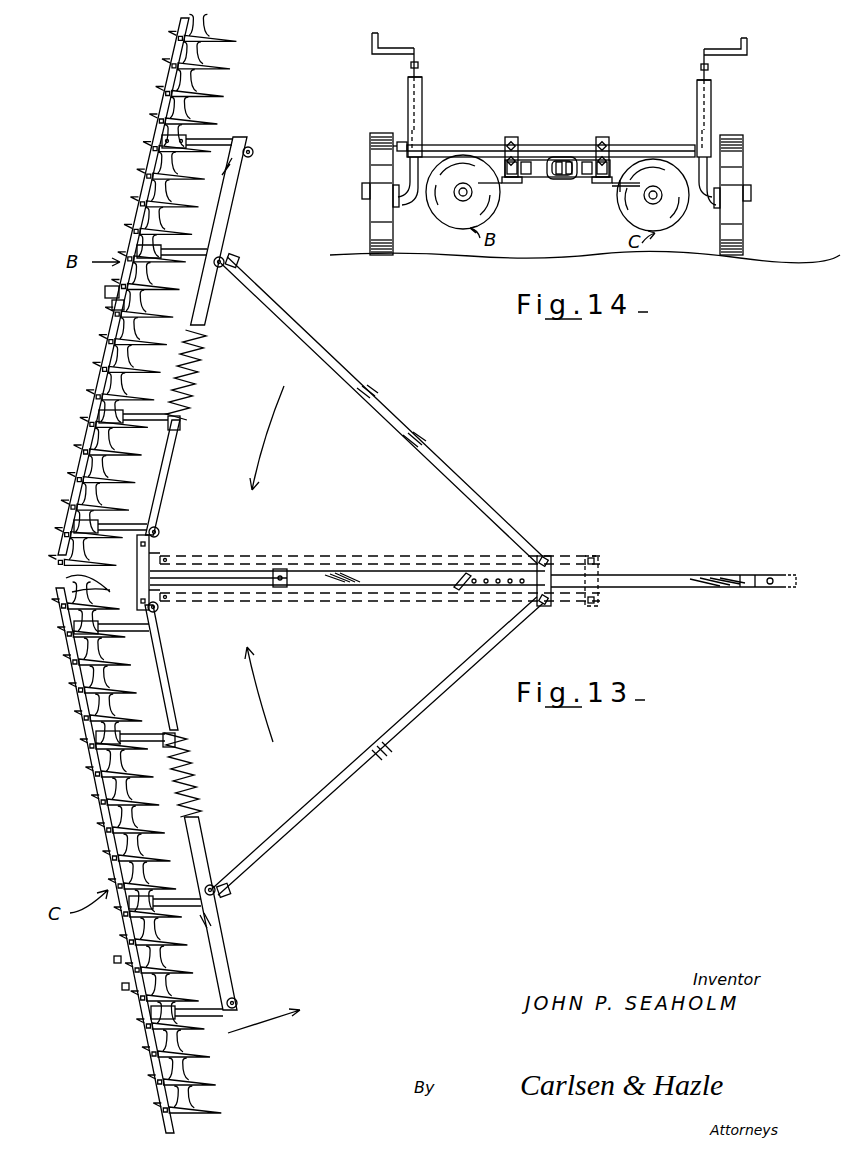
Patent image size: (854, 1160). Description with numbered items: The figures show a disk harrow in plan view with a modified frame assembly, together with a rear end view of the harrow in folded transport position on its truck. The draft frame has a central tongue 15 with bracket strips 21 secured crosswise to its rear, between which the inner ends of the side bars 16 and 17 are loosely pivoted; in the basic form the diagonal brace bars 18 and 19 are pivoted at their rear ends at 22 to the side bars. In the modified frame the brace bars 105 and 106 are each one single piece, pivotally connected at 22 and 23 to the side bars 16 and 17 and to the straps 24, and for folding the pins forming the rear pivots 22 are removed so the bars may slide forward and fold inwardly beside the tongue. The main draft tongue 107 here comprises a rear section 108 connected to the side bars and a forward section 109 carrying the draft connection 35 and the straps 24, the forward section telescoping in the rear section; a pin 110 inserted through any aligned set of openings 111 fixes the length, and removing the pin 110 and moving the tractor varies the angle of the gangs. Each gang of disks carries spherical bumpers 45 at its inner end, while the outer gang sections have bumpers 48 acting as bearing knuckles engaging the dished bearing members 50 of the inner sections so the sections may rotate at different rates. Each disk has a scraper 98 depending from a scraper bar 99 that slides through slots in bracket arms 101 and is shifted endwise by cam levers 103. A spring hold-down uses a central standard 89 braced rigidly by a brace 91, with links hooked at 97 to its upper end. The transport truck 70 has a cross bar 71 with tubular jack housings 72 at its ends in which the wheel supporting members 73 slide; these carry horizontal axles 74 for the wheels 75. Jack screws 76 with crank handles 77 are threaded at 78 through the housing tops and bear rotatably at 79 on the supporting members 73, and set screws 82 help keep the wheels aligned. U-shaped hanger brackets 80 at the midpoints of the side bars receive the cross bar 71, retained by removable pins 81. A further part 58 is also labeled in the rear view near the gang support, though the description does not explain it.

In FIG. 14, the main draft member or tongue 15 is at (560, 160).
In FIG. 13, the side bar 16 is at (228, 213).
In FIG. 14, the side bar 16 is at (512, 180).
In FIG. 13, the side bar 17 is at (222, 958).
In FIG. 14, the side bar 17 is at (598, 180).
In FIG. 14, the brace bar 18 is at (531, 180).
In FIG. 14, the brace bar 19 is at (576, 180).
In FIG. 14, the bracket strips 21 is at (562, 160).
In FIG. 13, the rear pivot 22 is at (238, 259).
In FIG. 13, the pivot connection 23 is at (545, 556).
In FIG. 13, the straps 24 is at (553, 577).
In FIG. 13, the draft connection 35 is at (757, 574).
In FIG. 13, the bumpers 45 is at (72, 572).
In FIG. 13, the bumpers 48 is at (112, 289).
In FIG. 13, the bearing members 50 is at (116, 305).
In FIG. 14, the axle support 58 is at (618, 200).
In FIG. 14, the truck or carriage device 70 is at (356, 166).
In FIG. 14, the cross bar or support member 71 is at (458, 150).
In FIG. 14, the jack housings 72 is at (408, 122).
In FIG. 14, the wheel supporting members 73 is at (410, 170).
In FIG. 14, the axles 74 is at (399, 208).
In FIG. 14, the wheels 75 is at (370, 219).
In FIG. 14, the jack screws 76 is at (420, 65).
In FIG. 14, the crank handles 77 is at (370, 43).
In FIG. 14, the threaded engagement 78 is at (421, 83).
In FIG. 14, the rotatable bearing 79 is at (421, 108).
In FIG. 13, the hanger brackets 80 is at (193, 840).
In FIG. 14, the hanger brackets 80 is at (520, 147).
In FIG. 13, the removable pins or bolts 81 is at (205, 302).
In FIG. 14, the removable pins or bolts 81 is at (512, 137).
In FIG. 14, the set screws 82 is at (396, 148).
In FIG. 13, the standard or arm member 89 is at (152, 553).
In FIG. 13, the brace 91 is at (223, 572).
In FIG. 13, the hooked ends 97 is at (135, 606).
In FIG. 13, the scraper 98 is at (123, 986).
In FIG. 13, the scraper bars 99 is at (150, 146).
In FIG. 13, the bracket arms 101 is at (165, 138).
In FIG. 13, the cam levers 103 is at (142, 1020).
In FIG. 13, the brace bar 105 is at (397, 414).
In FIG. 13, the brace bar 106 is at (350, 782).
In FIG. 13, the main draft tongue or bar 107 is at (323, 571).
In FIG. 13, the rear section 108 is at (308, 590).
In FIG. 13, the forward section 109 is at (650, 589).
In FIG. 13, the pin 110 is at (453, 578).
In FIG. 13, the openings 111 is at (497, 586).